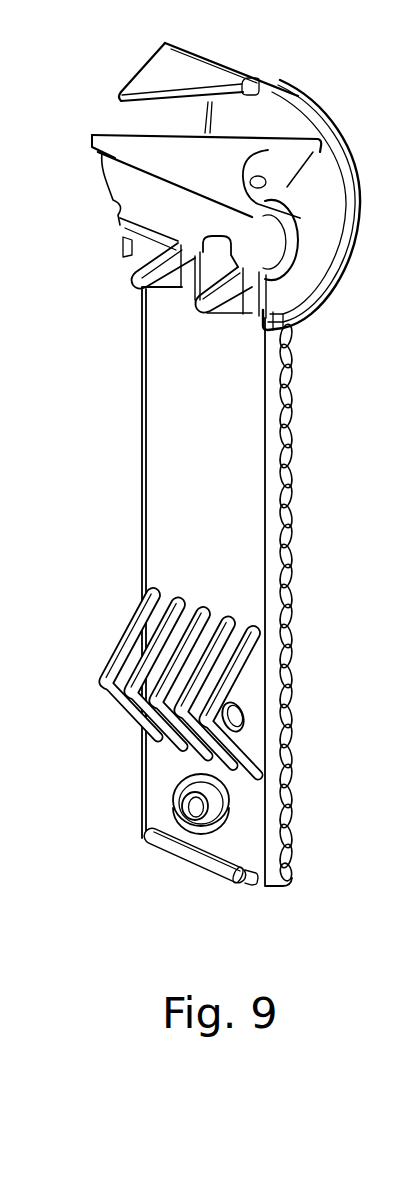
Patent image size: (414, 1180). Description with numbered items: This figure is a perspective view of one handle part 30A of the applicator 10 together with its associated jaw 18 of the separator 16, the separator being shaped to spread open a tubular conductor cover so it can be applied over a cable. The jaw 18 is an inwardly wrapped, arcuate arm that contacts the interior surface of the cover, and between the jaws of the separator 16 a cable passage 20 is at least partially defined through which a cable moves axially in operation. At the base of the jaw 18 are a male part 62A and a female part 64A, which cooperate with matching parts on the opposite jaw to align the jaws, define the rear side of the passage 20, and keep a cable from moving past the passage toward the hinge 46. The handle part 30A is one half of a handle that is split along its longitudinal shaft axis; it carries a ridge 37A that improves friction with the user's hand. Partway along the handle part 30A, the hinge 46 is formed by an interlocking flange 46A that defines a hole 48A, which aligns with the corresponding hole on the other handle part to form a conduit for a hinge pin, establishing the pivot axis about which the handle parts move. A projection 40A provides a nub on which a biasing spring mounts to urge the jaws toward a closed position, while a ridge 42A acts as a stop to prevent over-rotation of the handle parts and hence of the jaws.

The applicator 10 is at (88, 58).
The separator 16 is at (283, 140).
The jaws 18 is at (138, 148).
The cable passage 20 is at (252, 237).
The female part 64A is at (190, 286).
The male part 62A is at (216, 310).
The handle part 30A is at (237, 504).
The ridge 37A is at (296, 566).
The interlocking flange 46A is at (247, 684).
The hinge 46 is at (242, 682).
The hole 48A is at (250, 718).
The projection 40A is at (170, 795).
The ridge 42A is at (208, 866).